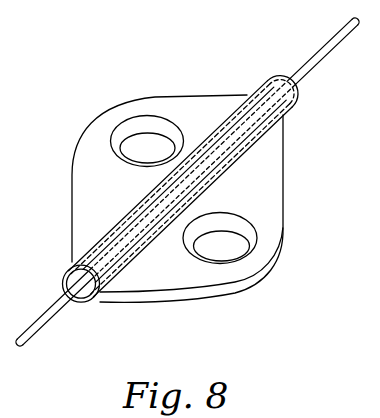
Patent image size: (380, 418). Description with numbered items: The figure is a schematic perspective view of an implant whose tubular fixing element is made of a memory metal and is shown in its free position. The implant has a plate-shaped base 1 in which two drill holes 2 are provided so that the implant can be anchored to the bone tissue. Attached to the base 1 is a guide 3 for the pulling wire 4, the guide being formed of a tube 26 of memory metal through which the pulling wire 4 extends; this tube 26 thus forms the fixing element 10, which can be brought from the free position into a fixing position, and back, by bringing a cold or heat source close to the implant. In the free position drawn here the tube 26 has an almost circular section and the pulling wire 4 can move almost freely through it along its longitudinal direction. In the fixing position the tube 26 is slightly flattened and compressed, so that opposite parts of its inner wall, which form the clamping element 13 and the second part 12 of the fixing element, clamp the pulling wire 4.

The plate-shaped base 1 is at (90, 173).
The drill holes 2 is at (143, 142).
The guide 3 is at (275, 127).
The pulling wire 4 is at (323, 57).
The fixing element 10 is at (232, 154).
The second part of the fixing element 12 is at (72, 268).
The clamping element 13 is at (78, 302).
The tube 26 is at (252, 93).